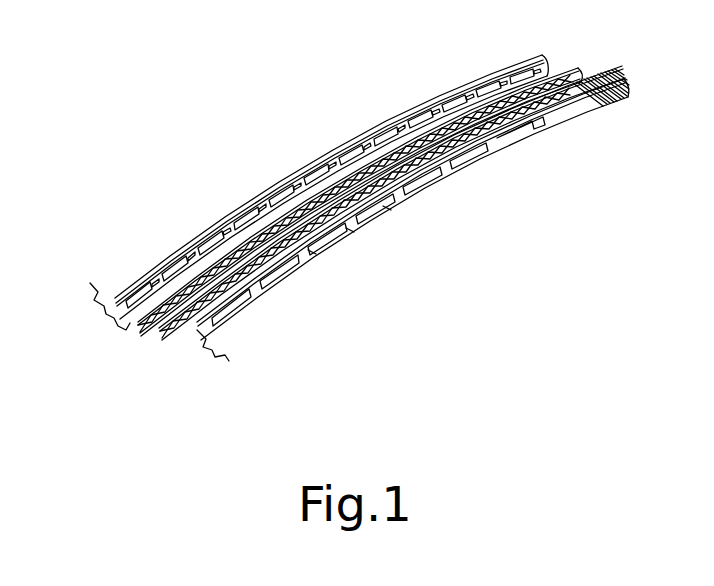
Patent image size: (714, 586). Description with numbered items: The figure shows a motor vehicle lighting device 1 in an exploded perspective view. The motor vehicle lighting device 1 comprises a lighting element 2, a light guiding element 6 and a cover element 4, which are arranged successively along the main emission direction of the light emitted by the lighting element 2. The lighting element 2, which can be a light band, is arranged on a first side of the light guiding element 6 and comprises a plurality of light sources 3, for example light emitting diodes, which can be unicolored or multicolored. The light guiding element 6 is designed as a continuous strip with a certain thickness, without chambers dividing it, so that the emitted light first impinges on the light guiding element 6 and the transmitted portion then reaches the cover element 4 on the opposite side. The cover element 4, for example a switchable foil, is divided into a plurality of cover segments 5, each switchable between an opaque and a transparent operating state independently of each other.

The motor vehicle lighting device 1 is at (80, 363).
The lighting element 2 is at (333, 150).
The light sources 3 is at (223, 223).
The cover element 4 is at (437, 198).
The cover segments 5 is at (387, 208).
The light guiding element 6 is at (588, 67).